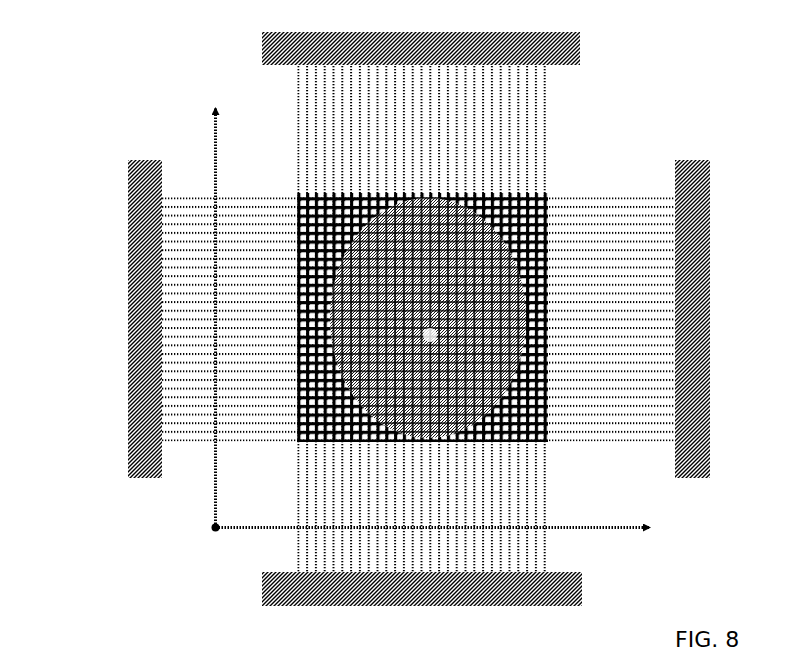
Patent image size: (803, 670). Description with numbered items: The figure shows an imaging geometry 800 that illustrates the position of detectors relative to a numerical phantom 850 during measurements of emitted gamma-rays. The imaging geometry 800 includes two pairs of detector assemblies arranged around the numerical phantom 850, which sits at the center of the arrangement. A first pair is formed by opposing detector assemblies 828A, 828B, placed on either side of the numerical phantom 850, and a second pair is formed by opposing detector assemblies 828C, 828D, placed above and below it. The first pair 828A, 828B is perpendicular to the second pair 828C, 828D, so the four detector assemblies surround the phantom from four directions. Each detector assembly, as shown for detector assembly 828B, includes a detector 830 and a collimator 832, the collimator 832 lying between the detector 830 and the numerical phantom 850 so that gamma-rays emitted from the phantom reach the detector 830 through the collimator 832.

The imaging geometry 800 is at (108, 30).
The detector assembly 828A is at (150, 147).
The detector assembly 828B is at (722, 298).
The detector assembly 828C is at (594, 50).
The detector assembly 828D is at (252, 584).
The detector 830 is at (694, 403).
The collimator 832 is at (673, 443).
The numerical phantom 850 is at (362, 434).